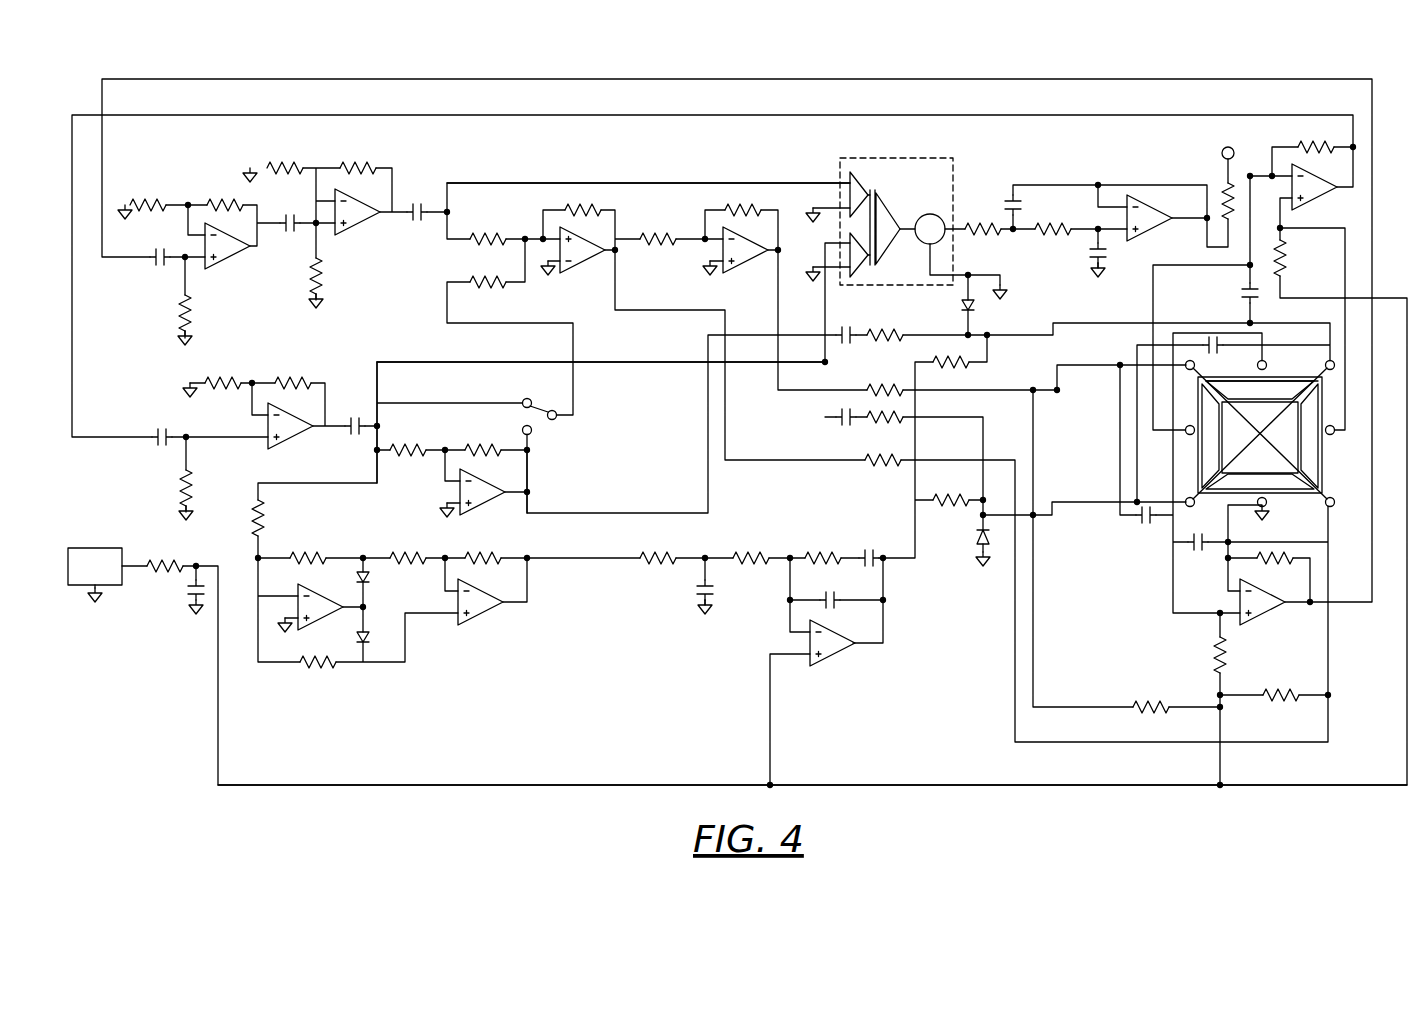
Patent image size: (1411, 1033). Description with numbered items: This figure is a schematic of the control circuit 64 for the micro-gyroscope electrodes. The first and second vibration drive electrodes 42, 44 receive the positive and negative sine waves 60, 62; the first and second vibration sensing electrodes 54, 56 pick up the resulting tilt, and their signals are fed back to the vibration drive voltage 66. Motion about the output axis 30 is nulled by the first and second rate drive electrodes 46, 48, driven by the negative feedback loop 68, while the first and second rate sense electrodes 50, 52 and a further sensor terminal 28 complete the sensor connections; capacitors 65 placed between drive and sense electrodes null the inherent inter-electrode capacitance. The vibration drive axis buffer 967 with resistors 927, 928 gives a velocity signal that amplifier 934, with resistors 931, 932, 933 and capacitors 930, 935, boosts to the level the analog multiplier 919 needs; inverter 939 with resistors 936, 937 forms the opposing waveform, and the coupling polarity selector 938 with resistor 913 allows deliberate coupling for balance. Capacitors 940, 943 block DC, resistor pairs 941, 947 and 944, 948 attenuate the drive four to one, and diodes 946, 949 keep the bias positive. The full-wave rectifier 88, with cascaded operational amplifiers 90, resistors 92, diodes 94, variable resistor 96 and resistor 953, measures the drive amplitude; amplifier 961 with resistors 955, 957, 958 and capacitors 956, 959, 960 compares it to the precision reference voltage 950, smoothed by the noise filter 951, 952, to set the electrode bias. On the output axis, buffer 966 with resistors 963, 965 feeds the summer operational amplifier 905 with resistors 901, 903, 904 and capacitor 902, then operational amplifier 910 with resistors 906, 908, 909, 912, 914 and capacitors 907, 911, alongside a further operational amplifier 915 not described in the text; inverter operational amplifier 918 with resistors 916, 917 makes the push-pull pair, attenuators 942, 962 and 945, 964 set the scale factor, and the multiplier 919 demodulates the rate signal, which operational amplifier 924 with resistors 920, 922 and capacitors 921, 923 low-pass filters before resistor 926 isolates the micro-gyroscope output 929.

The ground terminal of sensor 28 is at (1264, 506).
The output axis 30 is at (1348, 450).
The first vibration drive electrode 42 is at (1220, 440).
The second vibration drive electrode 44 is at (1300, 412).
The first rate drive electrode 46 is at (1262, 394).
The second rate drive electrode 48 is at (1330, 506).
The first rate sense electrode 50 is at (1236, 379).
The second rate sense electrode 52 is at (1185, 508).
The first vibration sensing electrode 54 is at (1205, 406).
The second vibration sensing electrode 56 is at (1322, 462).
The positive sine wave 60 is at (330, 418).
The negative sine wave 62 is at (527, 492).
The control circuit 64 is at (629, 704).
The capacitors 65 is at (1198, 550).
The vibration drive voltage 66 is at (415, 362).
The negative feedback loop 68 is at (663, 151).
The full-wave rectifier 88 is at (473, 656).
The operational amplifiers 90 is at (490, 616).
The resistors 92 is at (470, 554).
The diodes 94 is at (366, 580).
The variable resistor 96 is at (346, 669).
The resistor 901 is at (160, 198).
The capacitor 902 is at (158, 265).
The resistor 903 is at (180, 318).
The resistor 904 is at (228, 201).
The summer operational amplifier 905 is at (232, 258).
The resistor 906 is at (287, 164).
The capacitor 907 is at (284, 230).
The resistor 908 is at (322, 274).
The resistor 909 is at (354, 163).
The operational amplifier 910 is at (366, 222).
The capacitor 911 is at (428, 196).
The resistor 912 is at (486, 232).
The resistor 913 is at (476, 279).
The resistor 914 is at (582, 204).
The operational amplifier 915 is at (588, 258).
The resistor 916 is at (652, 236).
The resistor 917 is at (745, 206).
The inverter operational amplifier 918 is at (750, 258).
The analog multiplier 919 is at (883, 158).
The resistor 920 is at (973, 210).
The capacitor 921 is at (1022, 209).
The resistor 922 is at (1062, 236).
The capacitor 923 is at (1093, 256).
The operational amplifier 924 is at (1154, 196).
The resistor 926 is at (1223, 184).
The resistor 927 is at (1314, 142).
The resistor 928 is at (1284, 258).
The micro-gyroscope output 929 is at (1224, 150).
The capacitor 930 is at (152, 428).
The resistor 931 is at (178, 477).
The resistor 932 is at (220, 378).
The resistor 933 is at (290, 380).
The amplifier 934 is at (285, 440).
The capacitor 935 is at (350, 430).
The resistor 936 is at (406, 446).
The resistor 937 is at (479, 446).
The coupling polarity selector 938 is at (552, 408).
The inverter 939 is at (488, 506).
The capacitor 940 is at (846, 328).
The resistor 941 is at (885, 332).
The resistor 942 is at (884, 388).
The capacitor 943 is at (834, 417).
The resistor 944 is at (880, 426).
The resistor 945 is at (885, 468).
The diode 946 is at (978, 314).
The resistor 947 is at (979, 371).
The resistor 948 is at (947, 484).
The diode 949 is at (978, 548).
The precision reference voltage 950 is at (92, 548).
The noise filter resistor 951 is at (152, 558).
The noise filter capacitor 952 is at (186, 606).
The resistor 953 is at (270, 522).
The resistor 955 is at (664, 554).
The capacitor 956 is at (694, 592).
The resistor 957 is at (744, 556).
The resistor 958 is at (818, 554).
The capacitor 959 is at (874, 554).
The capacitor 960 is at (838, 602).
The amplifier 961 is at (836, 658).
The resistor 962 is at (1152, 704).
The resistor 963 is at (1211, 644).
The resistor 964 is at (1278, 692).
The resistor 965 is at (1290, 580).
The output axis buffer 966 is at (1274, 614).
The vibration drive axis buffer 967 is at (1323, 196).